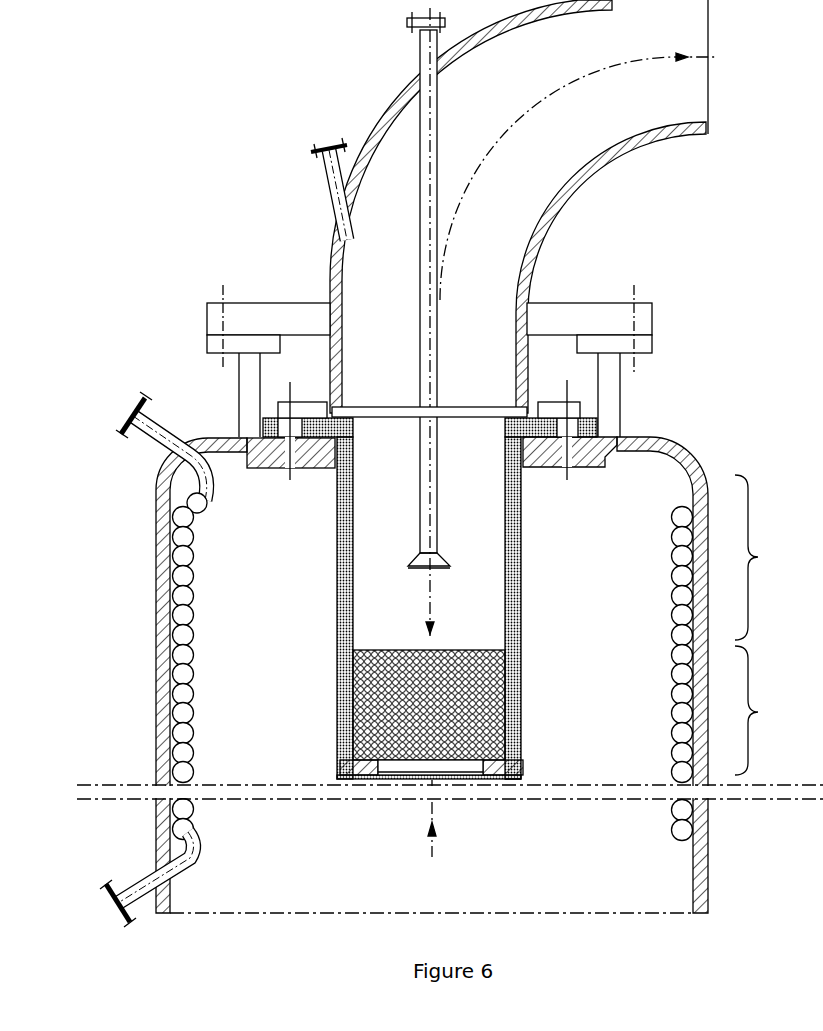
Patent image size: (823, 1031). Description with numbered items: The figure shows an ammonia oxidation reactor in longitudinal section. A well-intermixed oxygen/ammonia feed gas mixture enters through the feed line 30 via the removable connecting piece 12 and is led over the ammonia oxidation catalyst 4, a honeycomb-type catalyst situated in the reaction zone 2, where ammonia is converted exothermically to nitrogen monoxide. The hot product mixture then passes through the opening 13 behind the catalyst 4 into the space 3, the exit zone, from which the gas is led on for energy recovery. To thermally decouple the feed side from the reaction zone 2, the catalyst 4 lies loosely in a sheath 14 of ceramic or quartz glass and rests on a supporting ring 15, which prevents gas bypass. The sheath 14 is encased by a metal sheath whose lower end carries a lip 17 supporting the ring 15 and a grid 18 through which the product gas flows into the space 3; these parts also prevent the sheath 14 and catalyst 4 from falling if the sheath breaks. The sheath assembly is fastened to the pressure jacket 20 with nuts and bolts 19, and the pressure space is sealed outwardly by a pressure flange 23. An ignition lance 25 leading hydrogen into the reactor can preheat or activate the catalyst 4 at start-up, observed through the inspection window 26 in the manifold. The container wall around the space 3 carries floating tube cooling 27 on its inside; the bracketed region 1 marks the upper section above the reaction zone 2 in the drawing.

The upper zone 1 is at (758, 557).
The reaction zone 2 is at (758, 710).
The space 3 is at (558, 732).
The ammonia oxidation catalyst 4 is at (443, 765).
The connecting piece 12 is at (648, 147).
The opening 13 is at (410, 768).
The sheath 14 is at (353, 565).
The supporting ring 15 is at (340, 762).
The lip 17 is at (520, 782).
The grid 18 is at (422, 773).
The nuts and bolts 19 is at (294, 383).
The pressure jacket 20 is at (650, 447).
The pressure flange 23 is at (640, 315).
The ignition lance 25 is at (438, 495).
The inspection window 26 is at (340, 186).
The floating tube cooling 27 is at (186, 555).
The feed line 30 is at (588, 82).